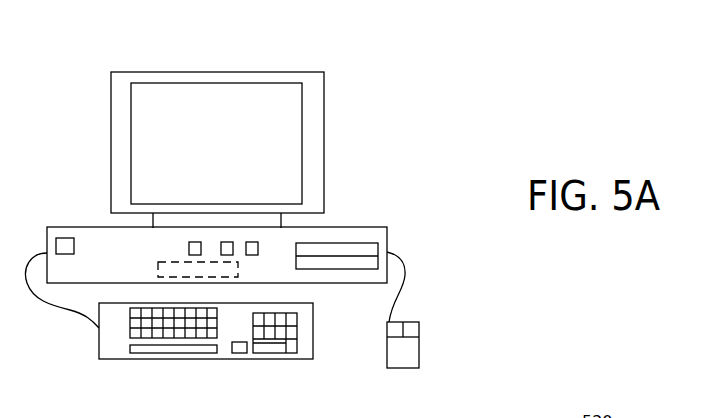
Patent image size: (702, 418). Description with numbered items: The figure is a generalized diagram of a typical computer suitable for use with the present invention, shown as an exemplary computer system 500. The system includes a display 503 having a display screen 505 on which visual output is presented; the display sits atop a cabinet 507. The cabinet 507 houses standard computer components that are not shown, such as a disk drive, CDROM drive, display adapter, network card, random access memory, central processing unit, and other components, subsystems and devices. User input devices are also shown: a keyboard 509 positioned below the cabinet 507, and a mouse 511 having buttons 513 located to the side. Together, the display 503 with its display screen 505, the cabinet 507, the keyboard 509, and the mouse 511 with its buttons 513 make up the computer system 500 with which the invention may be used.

The computer system 500 is at (432, 70).
The display 503 is at (323, 132).
The display screen 505 is at (258, 113).
The cabinet 507 is at (345, 227).
The keyboard 509 is at (206, 360).
The mouse 511 is at (407, 355).
The buttons 513 is at (395, 330).